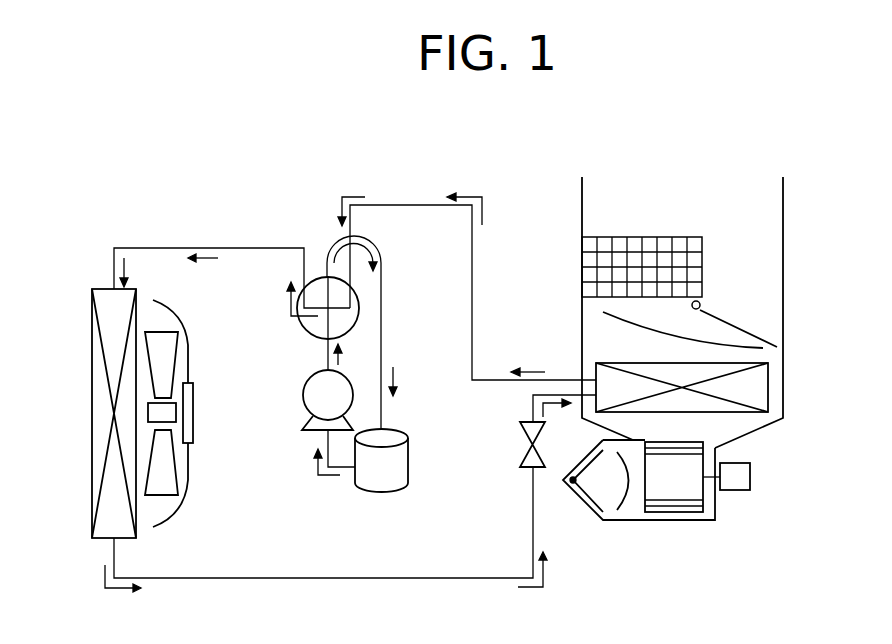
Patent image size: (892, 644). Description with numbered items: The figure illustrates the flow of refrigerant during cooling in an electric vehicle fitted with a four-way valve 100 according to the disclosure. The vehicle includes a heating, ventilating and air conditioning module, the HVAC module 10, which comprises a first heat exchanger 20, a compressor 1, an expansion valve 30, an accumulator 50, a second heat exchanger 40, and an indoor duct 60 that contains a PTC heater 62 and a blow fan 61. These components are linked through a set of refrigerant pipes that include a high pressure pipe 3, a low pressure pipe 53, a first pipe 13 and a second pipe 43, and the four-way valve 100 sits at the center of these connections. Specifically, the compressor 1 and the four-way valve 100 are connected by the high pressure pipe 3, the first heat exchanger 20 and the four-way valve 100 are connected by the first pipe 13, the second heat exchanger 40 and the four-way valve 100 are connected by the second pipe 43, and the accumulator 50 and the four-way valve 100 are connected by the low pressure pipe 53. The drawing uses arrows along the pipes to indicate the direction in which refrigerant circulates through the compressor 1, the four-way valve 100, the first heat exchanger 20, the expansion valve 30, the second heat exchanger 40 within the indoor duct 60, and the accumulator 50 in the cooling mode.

The heating, ventilating and air conditioning (HVAC) module 10 is at (712, 172).
The first pipe 13 is at (148, 248).
The first heat exchanger 20 is at (92, 341).
The four-way valve 100 is at (320, 277).
The second pipe 43 is at (405, 205).
The low pressure pipe 53 is at (383, 304).
The high pressure pipe 3 is at (326, 354).
The compressor 1 is at (312, 393).
The accumulator 50 is at (381, 491).
The expansion valve 30 is at (520, 453).
The second heat exchanger 40 is at (770, 388).
The indoor duct 60 is at (785, 254).
The blow fan 61 is at (677, 512).
The PTC heater 62 is at (648, 236).